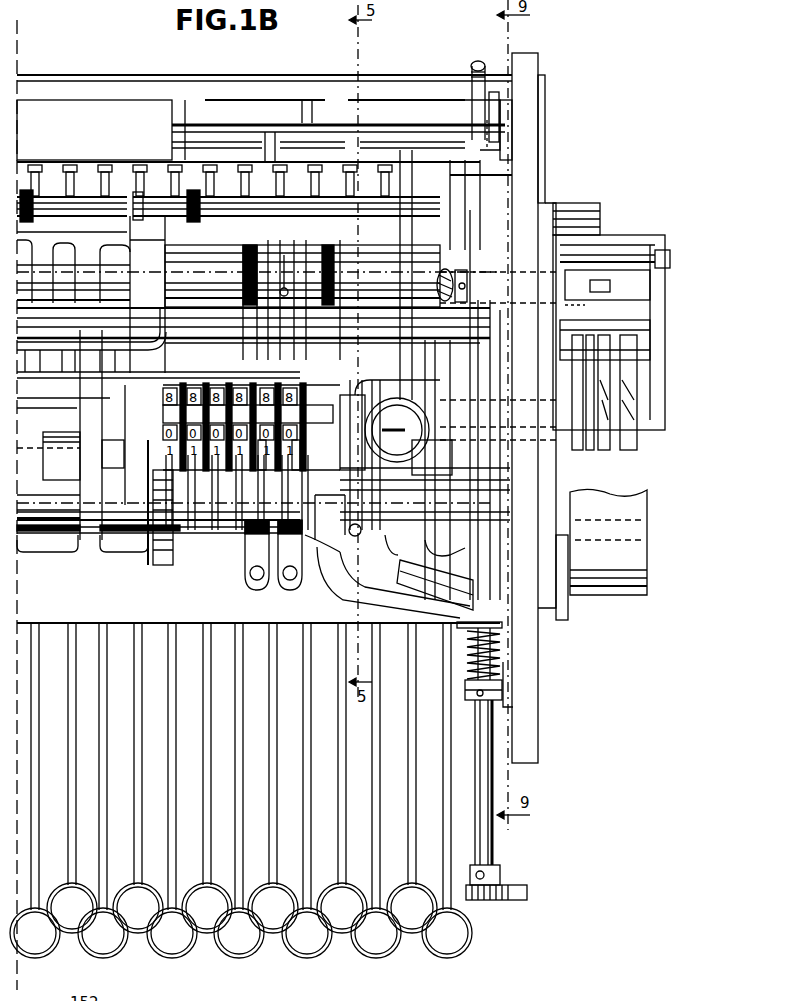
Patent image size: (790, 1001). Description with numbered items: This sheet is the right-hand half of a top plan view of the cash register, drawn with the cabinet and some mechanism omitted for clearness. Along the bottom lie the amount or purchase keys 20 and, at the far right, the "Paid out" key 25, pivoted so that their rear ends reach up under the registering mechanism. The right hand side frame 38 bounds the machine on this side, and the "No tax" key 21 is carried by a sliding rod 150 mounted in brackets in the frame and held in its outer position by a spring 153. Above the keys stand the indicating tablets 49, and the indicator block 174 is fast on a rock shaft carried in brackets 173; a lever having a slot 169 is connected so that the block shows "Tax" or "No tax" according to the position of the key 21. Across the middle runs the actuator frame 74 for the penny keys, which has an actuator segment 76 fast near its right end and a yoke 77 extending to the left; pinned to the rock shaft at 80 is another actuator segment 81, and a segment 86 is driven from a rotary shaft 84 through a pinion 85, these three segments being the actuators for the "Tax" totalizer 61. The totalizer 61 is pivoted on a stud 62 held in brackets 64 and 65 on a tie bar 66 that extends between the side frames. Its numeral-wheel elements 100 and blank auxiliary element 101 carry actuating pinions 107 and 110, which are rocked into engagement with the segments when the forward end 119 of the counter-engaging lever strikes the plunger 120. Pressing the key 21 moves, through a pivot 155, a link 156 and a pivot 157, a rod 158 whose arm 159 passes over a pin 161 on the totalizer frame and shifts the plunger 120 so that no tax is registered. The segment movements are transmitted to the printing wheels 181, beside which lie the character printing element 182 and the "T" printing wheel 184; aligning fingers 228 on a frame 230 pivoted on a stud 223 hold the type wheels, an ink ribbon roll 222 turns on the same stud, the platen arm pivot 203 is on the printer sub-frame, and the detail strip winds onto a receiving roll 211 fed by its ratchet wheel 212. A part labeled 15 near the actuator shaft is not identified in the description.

The gear 15 is at (426, 282).
The amount or purchase keys 20 is at (230, 955).
The "No tax" key 21 is at (505, 885).
The "Paid out" key 25 is at (437, 956).
The right hand side frame 38 is at (538, 752).
The indicating tablets 49 is at (348, 98).
The "Tax" totalizer 61 is at (240, 530).
The stud 62 is at (112, 455).
The bracket 64 is at (82, 500).
The bracket 65 is at (445, 553).
The tie bar 66 is at (197, 615).
The actuator frame for the penny keys 74 is at (118, 232).
The actuator segment 76 is at (330, 255).
The yoke 77 is at (56, 350).
The pin 80 is at (284, 255).
The actuator segment 81 is at (300, 255).
The rotary shaft 84 is at (198, 325).
The pinion 85 is at (247, 320).
The actuating segment 86 is at (262, 250).
The totalizer elements 100 is at (240, 460).
The element of the Tax totalizer 101 is at (300, 455).
The actuating pinion 107 is at (300, 412).
The actuating pinion 110 is at (332, 455).
The forward end of lever 119 is at (336, 561).
The plunger 120 is at (365, 540).
The sliding rod 150 is at (495, 785).
The spring 153 is at (500, 660).
The pivotal connection 155 is at (473, 591).
The link 156 is at (378, 582).
The pivot 157 is at (333, 522).
The rod 158 is at (125, 538).
The arm 159 is at (397, 550).
The pin 161 is at (392, 440).
The slot 169 is at (495, 150).
The brackets 173 is at (510, 112).
The indicator block 174 is at (155, 108).
The printing wheels 181 is at (615, 452).
The printing element 182 is at (590, 455).
The printing wheel 184 is at (583, 403).
The pivot 203 is at (598, 214).
The receiving roll 211 is at (647, 500).
The ratchet wheel 212 is at (568, 598).
The roll 222 is at (612, 243).
The stud 223 is at (668, 258).
The aligning fingers 228 is at (588, 338).
The frame 230 is at (655, 298).